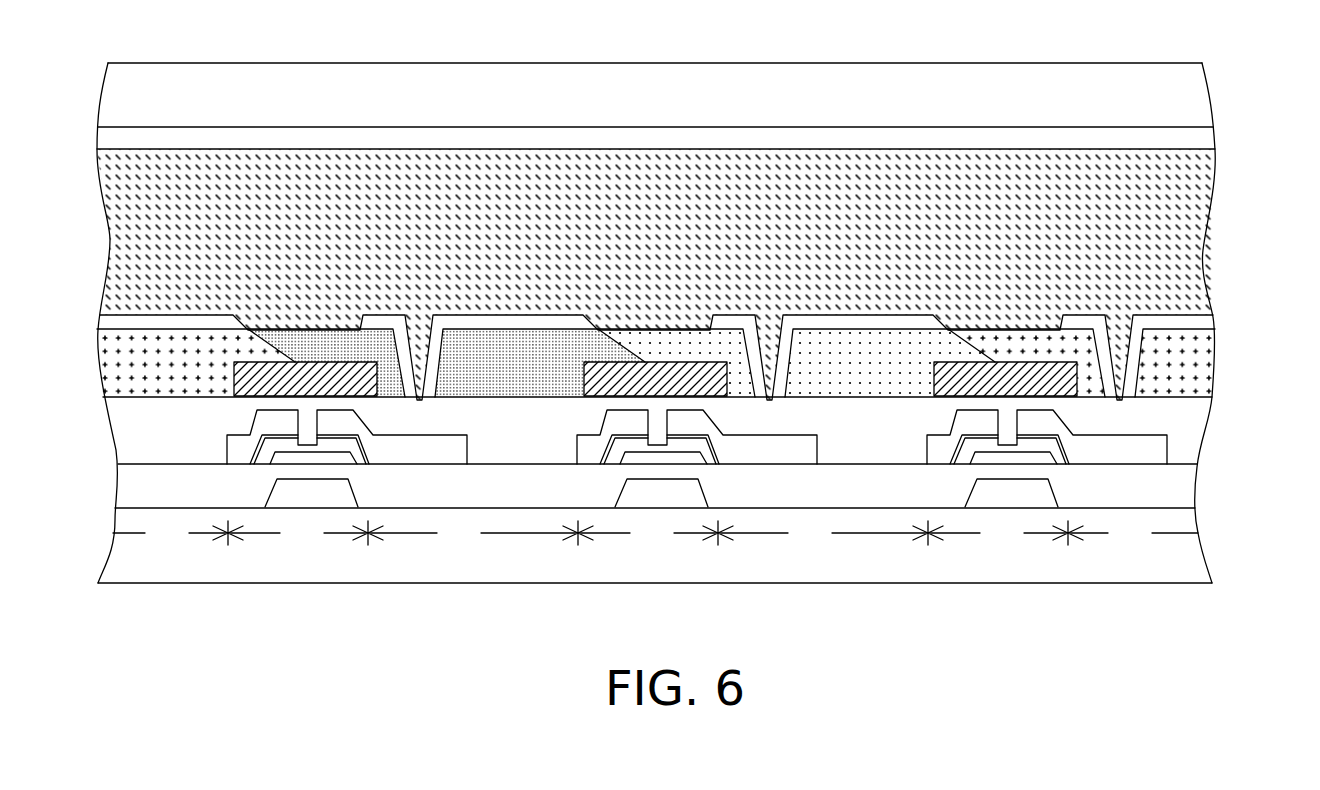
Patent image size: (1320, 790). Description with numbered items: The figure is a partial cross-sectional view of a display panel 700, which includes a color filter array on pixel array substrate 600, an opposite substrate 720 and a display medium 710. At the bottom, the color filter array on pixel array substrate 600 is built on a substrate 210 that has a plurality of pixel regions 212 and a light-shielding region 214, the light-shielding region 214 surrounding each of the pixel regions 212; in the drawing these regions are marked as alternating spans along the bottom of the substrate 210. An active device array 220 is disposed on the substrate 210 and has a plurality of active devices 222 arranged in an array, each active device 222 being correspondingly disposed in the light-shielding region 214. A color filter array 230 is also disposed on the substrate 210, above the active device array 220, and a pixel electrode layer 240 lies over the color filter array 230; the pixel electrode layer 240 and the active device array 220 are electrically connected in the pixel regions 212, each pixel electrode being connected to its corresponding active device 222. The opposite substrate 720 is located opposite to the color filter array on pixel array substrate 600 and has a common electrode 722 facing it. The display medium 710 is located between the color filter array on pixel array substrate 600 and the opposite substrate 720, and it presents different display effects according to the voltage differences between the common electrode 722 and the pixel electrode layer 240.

The color filter array on pixel array substrate 600 is at (68, 323).
The display panel 700 is at (1219, 363).
The opposite substrate 720 is at (703, 96).
The common electrode 722 is at (702, 155).
The display medium 710 is at (701, 274).
The pixel electrode layer 240 is at (708, 335).
The color filter array 230 is at (692, 363).
The active device array 220 is at (696, 452).
The active device 222 is at (661, 456).
The substrate 210 is at (701, 577).
The pixel region 212 is at (655, 533).
The light-shielding region 214 is at (648, 533).